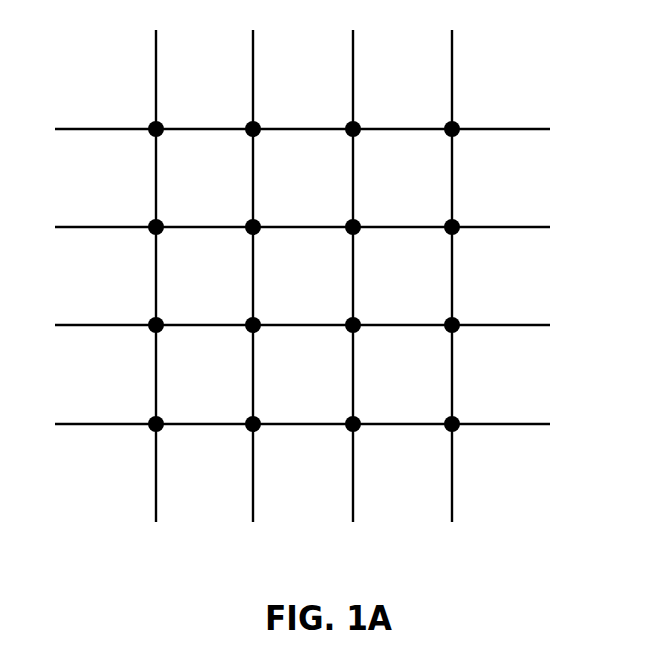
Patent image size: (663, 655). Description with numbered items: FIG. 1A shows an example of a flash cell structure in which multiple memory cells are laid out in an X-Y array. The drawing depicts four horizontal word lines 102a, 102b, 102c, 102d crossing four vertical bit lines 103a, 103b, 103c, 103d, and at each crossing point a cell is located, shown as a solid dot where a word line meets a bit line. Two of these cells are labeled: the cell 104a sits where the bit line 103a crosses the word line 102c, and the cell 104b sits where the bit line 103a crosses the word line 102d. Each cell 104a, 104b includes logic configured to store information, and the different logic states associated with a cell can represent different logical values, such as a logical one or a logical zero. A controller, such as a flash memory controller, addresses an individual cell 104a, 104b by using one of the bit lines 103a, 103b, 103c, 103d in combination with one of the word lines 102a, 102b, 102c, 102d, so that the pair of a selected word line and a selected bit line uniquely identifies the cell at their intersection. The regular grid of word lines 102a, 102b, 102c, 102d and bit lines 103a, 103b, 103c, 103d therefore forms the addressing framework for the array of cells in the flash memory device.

The word line 102a is at (512, 130).
The word line 102b is at (512, 228).
The word line 102c is at (512, 326).
The word line 102d is at (512, 425).
The bit line 103a is at (156, 52).
The bit line 103b is at (253, 80).
The bit line 103c is at (353, 52).
The bit line 103d is at (452, 70).
The cell 104a is at (148, 330).
The cell 104b is at (148, 429).